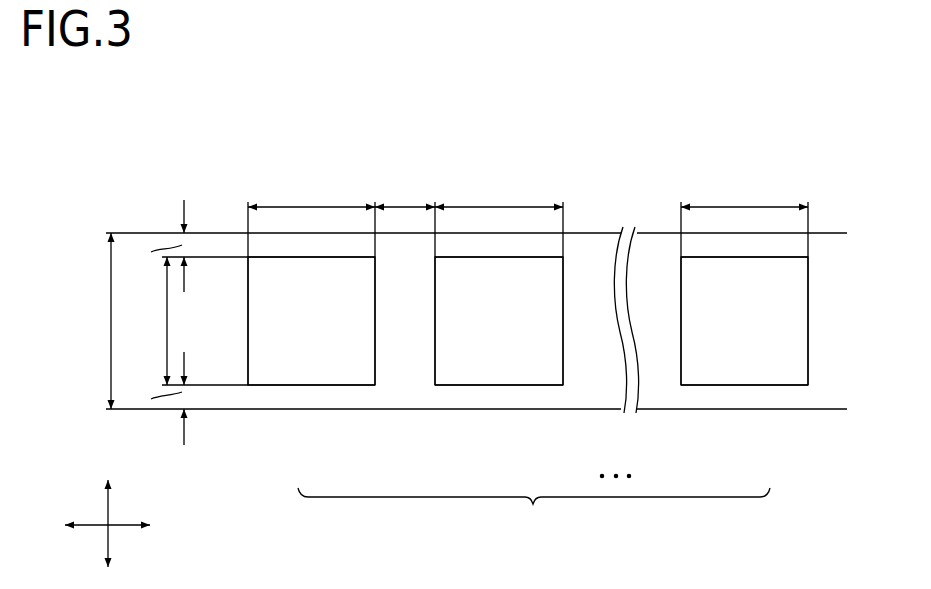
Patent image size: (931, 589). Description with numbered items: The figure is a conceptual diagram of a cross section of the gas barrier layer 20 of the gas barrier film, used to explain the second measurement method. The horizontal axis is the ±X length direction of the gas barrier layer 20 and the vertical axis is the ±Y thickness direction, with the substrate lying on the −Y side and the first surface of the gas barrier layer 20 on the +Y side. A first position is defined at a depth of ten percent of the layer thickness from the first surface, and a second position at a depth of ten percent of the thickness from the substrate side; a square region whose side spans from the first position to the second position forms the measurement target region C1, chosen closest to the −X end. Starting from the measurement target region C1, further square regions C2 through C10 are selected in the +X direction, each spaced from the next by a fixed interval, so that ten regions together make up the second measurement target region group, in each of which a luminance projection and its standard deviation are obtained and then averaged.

The gas barrier layer 20 is at (789, 156).
The measurement target region C1 is at (312, 372).
The measurement target region C2 is at (500, 372).
The measurement target region C10 is at (745, 372).